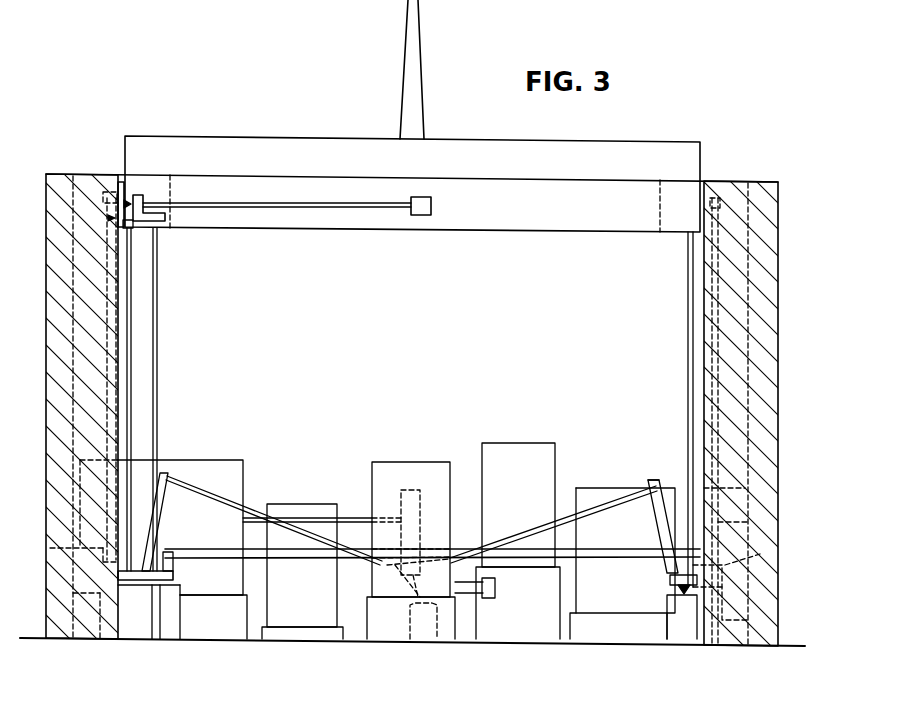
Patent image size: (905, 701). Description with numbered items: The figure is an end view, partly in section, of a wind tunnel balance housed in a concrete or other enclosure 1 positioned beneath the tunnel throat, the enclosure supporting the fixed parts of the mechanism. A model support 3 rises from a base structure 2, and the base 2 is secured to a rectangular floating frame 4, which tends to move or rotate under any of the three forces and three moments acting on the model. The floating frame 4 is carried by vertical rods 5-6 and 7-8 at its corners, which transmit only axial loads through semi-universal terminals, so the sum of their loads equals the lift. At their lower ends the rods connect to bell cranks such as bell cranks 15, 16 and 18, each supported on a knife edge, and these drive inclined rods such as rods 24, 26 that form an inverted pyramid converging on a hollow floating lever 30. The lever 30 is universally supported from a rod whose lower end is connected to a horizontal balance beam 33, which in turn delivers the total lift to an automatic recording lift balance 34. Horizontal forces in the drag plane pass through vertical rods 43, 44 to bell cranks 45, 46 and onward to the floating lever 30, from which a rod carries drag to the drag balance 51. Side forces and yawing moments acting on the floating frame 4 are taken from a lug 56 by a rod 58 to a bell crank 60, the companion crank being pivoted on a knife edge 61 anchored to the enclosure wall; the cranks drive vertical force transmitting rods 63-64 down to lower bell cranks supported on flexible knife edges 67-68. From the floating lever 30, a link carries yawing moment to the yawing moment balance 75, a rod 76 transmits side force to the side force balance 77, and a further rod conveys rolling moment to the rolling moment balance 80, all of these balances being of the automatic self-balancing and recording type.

The enclosure 1 is at (62, 174).
The base structure 2 is at (186, 131).
The model support 3 is at (406, 47).
The floating frame 4 is at (566, 230).
The vertical rods 5-6 is at (133, 401).
The vertical rods 7-8 is at (688, 396).
The bell crank 15 is at (144, 590).
The bell crank 16 is at (169, 482).
The bell crank 18 is at (659, 501).
The rod 24 is at (226, 490).
The rod 26 is at (613, 496).
The floating lever 30 is at (418, 506).
The balance beam 33 is at (464, 587).
The lift balance 34 is at (536, 443).
The vertical rod 43 is at (106, 329).
The vertical rod 44 is at (710, 325).
The bell crank 45 is at (50, 548).
The bell crank 46 is at (762, 560).
The drag balance 51 is at (433, 461).
The lug 56 is at (431, 206).
The rod 58 is at (320, 200).
The bell crank 60 is at (148, 186).
The knife edge 61 is at (120, 182).
The vertical force transmitting rods 63-64 is at (158, 352).
The flexible knife edges 67-68 is at (174, 578).
The yawing moment balance 75 is at (282, 504).
The rod 76 is at (308, 504).
The side force balance 77 is at (236, 450).
The rolling moment balance 80 is at (580, 488).